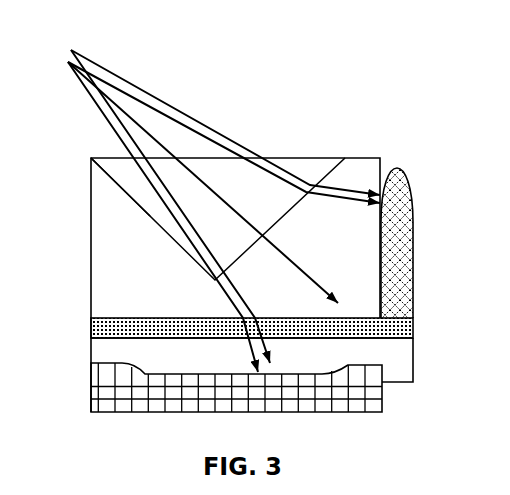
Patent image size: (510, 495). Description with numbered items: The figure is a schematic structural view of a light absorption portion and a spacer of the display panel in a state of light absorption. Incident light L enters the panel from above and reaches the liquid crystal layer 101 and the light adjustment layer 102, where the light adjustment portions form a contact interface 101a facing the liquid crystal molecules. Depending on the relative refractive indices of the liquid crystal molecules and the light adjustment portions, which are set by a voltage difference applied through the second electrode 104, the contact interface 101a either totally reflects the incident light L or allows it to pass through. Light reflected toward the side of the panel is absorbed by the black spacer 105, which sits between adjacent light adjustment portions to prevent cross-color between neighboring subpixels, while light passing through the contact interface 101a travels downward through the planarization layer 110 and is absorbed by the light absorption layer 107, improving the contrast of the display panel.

The incident light L is at (215, 195).
The liquid crystal layer 101 is at (125, 280).
The contact interface 101a is at (150, 217).
The light adjustment layer 102 is at (128, 180).
The second electrode 104 is at (105, 327).
The spacer 105 is at (405, 182).
The light absorption layer 107 is at (105, 398).
The planarization layer 110 is at (110, 357).